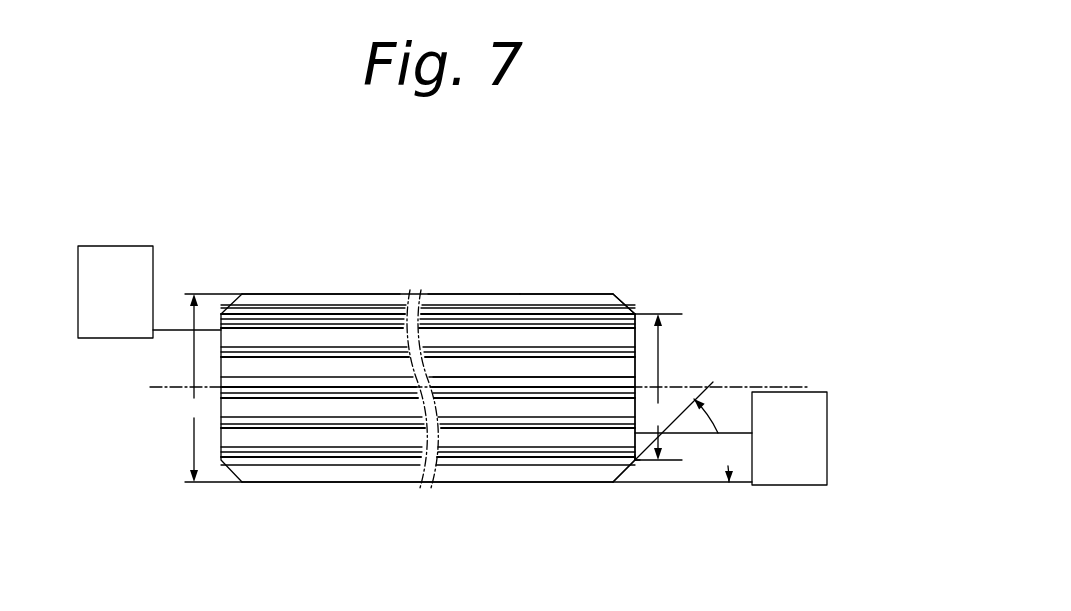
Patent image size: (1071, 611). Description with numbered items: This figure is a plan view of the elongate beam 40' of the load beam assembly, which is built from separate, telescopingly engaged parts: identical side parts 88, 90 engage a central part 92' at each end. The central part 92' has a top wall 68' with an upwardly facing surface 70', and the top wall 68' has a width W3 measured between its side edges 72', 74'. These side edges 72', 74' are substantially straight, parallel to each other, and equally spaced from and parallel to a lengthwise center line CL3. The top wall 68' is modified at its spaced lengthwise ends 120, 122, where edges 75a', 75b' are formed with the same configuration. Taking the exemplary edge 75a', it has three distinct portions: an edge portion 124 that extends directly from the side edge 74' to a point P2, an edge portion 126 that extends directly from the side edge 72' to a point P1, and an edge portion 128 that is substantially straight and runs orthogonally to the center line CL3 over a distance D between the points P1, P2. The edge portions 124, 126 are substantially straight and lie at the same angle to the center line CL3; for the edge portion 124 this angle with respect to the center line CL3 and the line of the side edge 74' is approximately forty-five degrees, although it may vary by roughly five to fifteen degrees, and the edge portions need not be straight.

The elongate beam 40' is at (455, 295).
The upwardly facing surface 70' is at (321, 284).
The side edge 72' is at (474, 263).
The central part 92' is at (566, 263).
The top wall 68' is at (432, 304).
The edge portion 126 is at (624, 304).
The point P1 is at (635, 314).
The lengthwise end 120 is at (635, 347).
The edge 75a' is at (587, 353).
The edge portion 128 is at (636, 408).
The point P2 is at (635, 460).
The edge portion 124 is at (628, 467).
The lengthwise end 122 is at (221, 355).
The edge 75b' is at (366, 433).
The side edge 74' is at (427, 516).
The side part 88 is at (128, 331).
The side part 90 is at (802, 478).
The width W3 is at (208, 388).
The distance D is at (658, 387).
The lengthwise center line CL3 is at (750, 387).